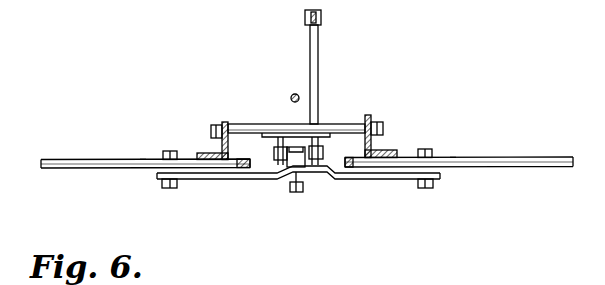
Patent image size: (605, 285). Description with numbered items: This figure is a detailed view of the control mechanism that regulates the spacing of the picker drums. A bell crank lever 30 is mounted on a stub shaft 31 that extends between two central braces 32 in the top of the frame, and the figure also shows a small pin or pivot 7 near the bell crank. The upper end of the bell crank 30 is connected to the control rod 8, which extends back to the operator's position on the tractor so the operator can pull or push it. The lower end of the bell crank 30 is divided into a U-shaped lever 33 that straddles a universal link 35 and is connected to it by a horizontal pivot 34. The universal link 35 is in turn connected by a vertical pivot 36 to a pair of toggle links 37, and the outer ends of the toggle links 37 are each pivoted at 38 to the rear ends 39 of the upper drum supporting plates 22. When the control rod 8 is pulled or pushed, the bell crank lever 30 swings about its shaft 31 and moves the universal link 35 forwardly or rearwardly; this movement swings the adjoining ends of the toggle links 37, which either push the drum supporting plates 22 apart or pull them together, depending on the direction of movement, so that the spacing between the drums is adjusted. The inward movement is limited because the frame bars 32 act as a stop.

The pin 7 is at (294, 94).
The control rod 8 is at (322, 15).
The upper drum supporting plate 22 is at (60, 160).
The bell crank lever 30 is at (318, 75).
The stub shaft 31 is at (348, 125).
The central brace 32 is at (200, 151).
The U-shaped lever 33 is at (262, 134).
The horizontal pivot 34 is at (324, 153).
The universal link 35 is at (296, 157).
The vertical pivot 36 is at (302, 193).
The toggle link 37 is at (240, 179).
The pivot 38 is at (170, 188).
The rear end of drum supporting plate 39 is at (143, 158).